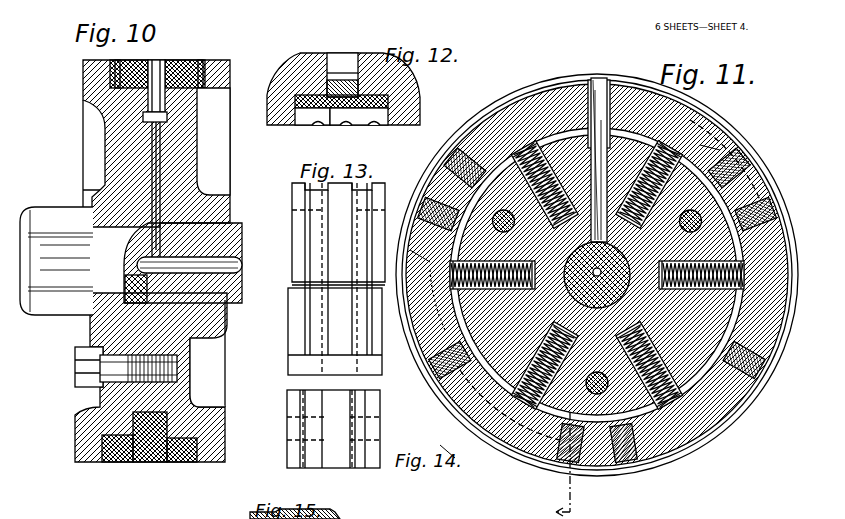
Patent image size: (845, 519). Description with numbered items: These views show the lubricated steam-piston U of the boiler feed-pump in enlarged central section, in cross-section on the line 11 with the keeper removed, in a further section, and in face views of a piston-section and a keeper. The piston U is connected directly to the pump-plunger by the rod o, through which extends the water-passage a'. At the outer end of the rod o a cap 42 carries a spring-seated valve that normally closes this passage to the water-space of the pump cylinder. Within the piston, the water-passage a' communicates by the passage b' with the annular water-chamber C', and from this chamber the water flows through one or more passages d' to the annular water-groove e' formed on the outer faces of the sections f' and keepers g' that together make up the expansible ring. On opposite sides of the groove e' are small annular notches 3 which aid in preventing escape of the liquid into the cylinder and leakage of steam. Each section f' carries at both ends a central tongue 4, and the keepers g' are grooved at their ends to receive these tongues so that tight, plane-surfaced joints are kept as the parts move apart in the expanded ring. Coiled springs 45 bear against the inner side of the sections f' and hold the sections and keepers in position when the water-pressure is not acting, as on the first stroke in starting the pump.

In FIG. 10, the steam-piston U is at (112, 157).
In FIG. 12, the steam-piston U is at (283, 62).
In FIG. 11, the steam-piston U is at (768, 408).
In FIG. 10, the piston section f' is at (100, 74).
In FIG. 12, the piston section f' is at (299, 129).
In FIG. 13, the piston section f' is at (326, 234).
In FIG. 11, the piston section f' is at (602, 281).
In FIG. 10, the annular water-groove e' is at (192, 264).
In FIG. 12, the annular water-groove e' is at (359, 132).
In FIG. 13, the annular water-groove e' is at (339, 279).
In FIG. 14, the annular water-groove e' is at (327, 439).
In FIG. 11, the annular water-groove e' is at (597, 258).
In FIG. 10, the water passage d' is at (109, 108).
In FIG. 11, the water passage d' is at (598, 223).
In FIG. 10, the annular water-chamber C' is at (204, 248).
In FIG. 12, the annular water-chamber C' is at (339, 61).
In FIG. 11, the annular water-chamber C' is at (727, 128).
In FIG. 10, the passage b' is at (185, 158).
In FIG. 11, the passage b' is at (618, 142).
In FIG. 10, the water-passage a' is at (191, 263).
In FIG. 11, the water-passage a' is at (597, 275).
In FIG. 10, the rod o is at (185, 300).
In FIG. 11, the rod o is at (575, 292).
In FIG. 10, the keeper g' is at (111, 462).
In FIG. 11, the keeper g' is at (602, 315).
In FIG. 10, the annular notches 3 is at (171, 66).
In FIG. 13, the annular notches 3 is at (305, 237).
In FIG. 14, the annular notches 3 is at (360, 418).
In FIG. 10, the section line 11 is at (152, 42).
In FIG. 12, the tongue 4 is at (333, 105).
In FIG. 13, the tongue 4 is at (335, 331).
In FIG. 11, the tongue 4 is at (589, 309).
In FIG. 11, the coiled springs 45 is at (487, 120).
In FIG. 15, the cap 42 is at (310, 510).